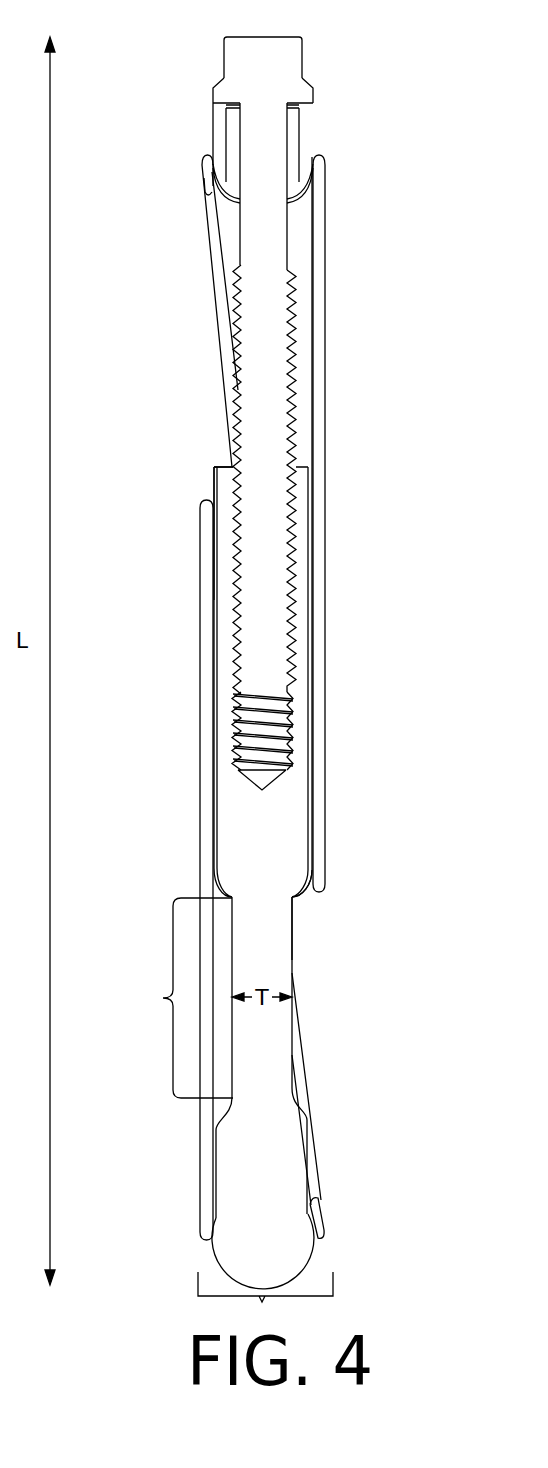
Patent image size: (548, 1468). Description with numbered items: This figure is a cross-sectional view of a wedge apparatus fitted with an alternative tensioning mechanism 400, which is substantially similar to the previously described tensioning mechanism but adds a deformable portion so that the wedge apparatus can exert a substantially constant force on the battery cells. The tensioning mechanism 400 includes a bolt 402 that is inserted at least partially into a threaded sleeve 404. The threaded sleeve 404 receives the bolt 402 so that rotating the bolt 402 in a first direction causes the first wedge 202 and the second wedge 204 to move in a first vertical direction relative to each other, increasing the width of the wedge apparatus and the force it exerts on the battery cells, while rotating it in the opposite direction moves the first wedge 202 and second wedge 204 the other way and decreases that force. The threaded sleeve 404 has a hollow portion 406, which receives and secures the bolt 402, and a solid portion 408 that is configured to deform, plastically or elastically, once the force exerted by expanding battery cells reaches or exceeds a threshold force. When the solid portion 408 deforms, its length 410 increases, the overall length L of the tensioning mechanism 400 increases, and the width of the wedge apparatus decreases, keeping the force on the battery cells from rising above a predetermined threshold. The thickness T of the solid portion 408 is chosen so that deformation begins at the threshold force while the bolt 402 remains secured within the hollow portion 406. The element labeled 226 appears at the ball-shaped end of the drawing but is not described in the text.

The tensioning mechanism 400 is at (375, 57).
The first wedge 202 is at (205, 180).
The second wedge 204 is at (318, 1203).
The ball tip 226 is at (265, 1275).
The bolt 402 is at (238, 283).
The threaded sleeve 404 is at (215, 467).
The hollow portion 406 is at (297, 538).
The solid portion 408 is at (297, 915).
The length 410 is at (160, 870).